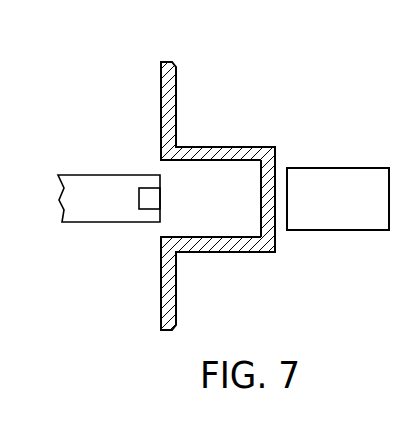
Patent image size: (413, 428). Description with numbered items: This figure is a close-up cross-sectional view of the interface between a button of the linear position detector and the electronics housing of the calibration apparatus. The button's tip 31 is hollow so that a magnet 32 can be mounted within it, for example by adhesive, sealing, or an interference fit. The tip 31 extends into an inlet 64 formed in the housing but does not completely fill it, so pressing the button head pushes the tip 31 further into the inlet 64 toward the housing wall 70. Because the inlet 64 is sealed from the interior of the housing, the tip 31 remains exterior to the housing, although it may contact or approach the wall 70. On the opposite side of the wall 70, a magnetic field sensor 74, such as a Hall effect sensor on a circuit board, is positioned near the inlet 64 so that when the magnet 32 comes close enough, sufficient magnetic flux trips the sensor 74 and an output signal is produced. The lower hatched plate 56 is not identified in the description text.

The tip 31 is at (78, 215).
The magnet 32 is at (150, 192).
The lower plate 56 is at (162, 302).
The inlet 64 is at (222, 173).
The housing wall 70 is at (275, 150).
The magnetic field sensor 74 is at (358, 232).